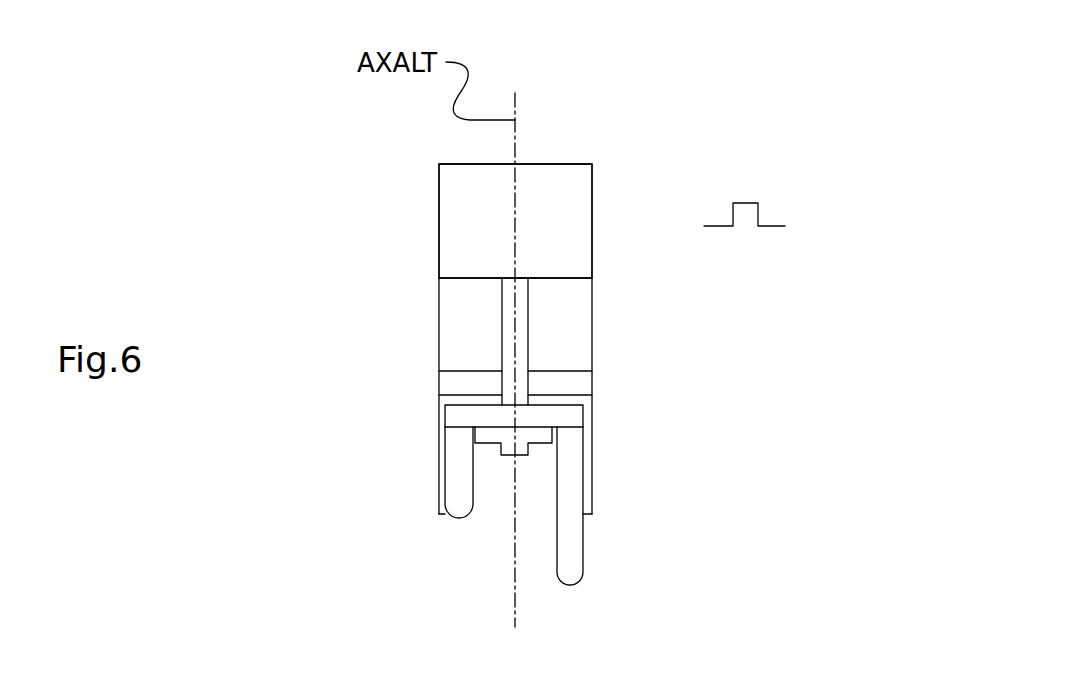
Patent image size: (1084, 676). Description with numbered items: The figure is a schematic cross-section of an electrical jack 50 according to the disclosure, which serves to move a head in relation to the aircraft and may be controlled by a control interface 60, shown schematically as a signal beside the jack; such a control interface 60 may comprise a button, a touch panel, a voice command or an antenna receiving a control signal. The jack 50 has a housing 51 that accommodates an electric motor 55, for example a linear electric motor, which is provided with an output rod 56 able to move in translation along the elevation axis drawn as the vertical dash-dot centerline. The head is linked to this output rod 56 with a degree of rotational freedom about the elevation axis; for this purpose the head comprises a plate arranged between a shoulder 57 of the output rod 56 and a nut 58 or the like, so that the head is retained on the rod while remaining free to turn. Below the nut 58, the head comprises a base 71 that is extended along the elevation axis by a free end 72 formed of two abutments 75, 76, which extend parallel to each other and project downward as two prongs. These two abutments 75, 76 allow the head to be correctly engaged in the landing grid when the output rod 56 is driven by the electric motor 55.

The jack 50 is at (360, 285).
The housing 51 is at (439, 240).
The electric motor 55 is at (707, 207).
The output rod 56 is at (501, 326).
The shoulder 57 is at (570, 383).
The nut 58 is at (489, 435).
The control interface 60 is at (758, 203).
The base 71 is at (570, 443).
The free end 72 is at (620, 517).
The abutment 75 is at (460, 500).
The abutment 76 is at (583, 547).